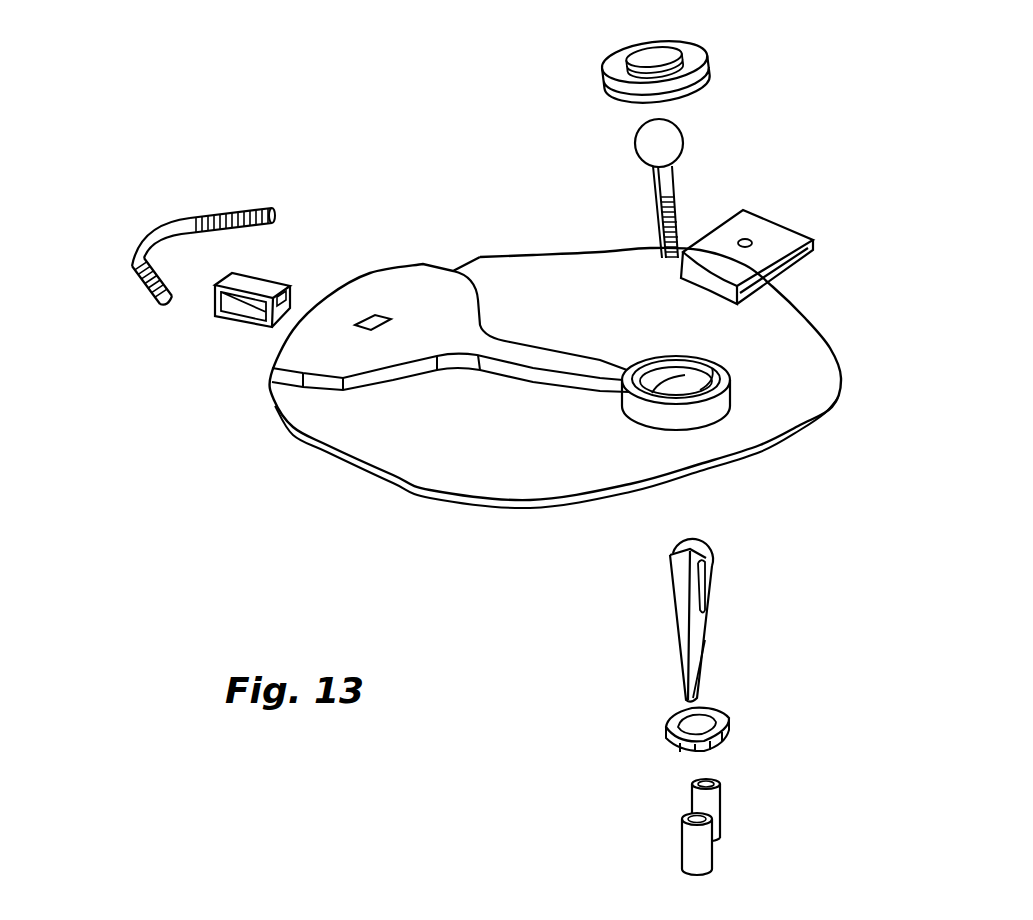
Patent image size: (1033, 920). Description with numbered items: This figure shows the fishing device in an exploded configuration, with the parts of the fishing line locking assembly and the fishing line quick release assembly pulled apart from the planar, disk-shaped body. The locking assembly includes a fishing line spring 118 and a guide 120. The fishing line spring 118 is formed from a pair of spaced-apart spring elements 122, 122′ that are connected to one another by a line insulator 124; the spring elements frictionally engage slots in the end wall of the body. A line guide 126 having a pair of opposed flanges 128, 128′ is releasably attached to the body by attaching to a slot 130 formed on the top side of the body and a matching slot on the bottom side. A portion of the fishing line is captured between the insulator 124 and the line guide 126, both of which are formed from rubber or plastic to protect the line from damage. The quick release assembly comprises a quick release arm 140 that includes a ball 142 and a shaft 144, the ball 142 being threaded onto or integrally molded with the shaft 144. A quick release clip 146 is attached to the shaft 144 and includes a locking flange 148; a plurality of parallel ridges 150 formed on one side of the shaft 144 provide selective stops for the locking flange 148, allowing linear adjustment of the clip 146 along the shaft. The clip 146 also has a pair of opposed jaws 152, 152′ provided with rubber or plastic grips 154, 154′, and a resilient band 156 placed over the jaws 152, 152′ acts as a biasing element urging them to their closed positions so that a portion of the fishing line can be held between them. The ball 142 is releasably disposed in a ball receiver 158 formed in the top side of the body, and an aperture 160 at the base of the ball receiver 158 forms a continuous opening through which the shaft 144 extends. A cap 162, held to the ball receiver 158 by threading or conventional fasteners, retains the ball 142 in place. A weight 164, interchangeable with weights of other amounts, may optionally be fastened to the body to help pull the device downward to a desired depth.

The fishing line spring 118 is at (119, 366).
The guide 120 is at (247, 282).
The spring element 122 is at (172, 268).
The spring element 122′ is at (228, 208).
The line insulator 124 is at (148, 227).
The line guide 126 is at (248, 312).
The flange 128 is at (282, 300).
The flange 128′ is at (283, 325).
The slot 130 is at (376, 313).
The quick release arm 140 is at (658, 208).
The ball 142 is at (652, 142).
The shaft 144 is at (677, 212).
The quick release clip 146 is at (678, 588).
The locking flange 148 is at (677, 535).
The parallel ridges 150 is at (660, 243).
The jaw 152 is at (685, 668).
The jaw 152′ is at (700, 673).
The grip 154 is at (693, 850).
The grip 154′ is at (713, 817).
The resilient band 156 is at (670, 737).
The ball receiver 158 is at (648, 412).
The aperture 160 is at (718, 365).
The cap 162 is at (708, 62).
The weight 164 is at (783, 240).